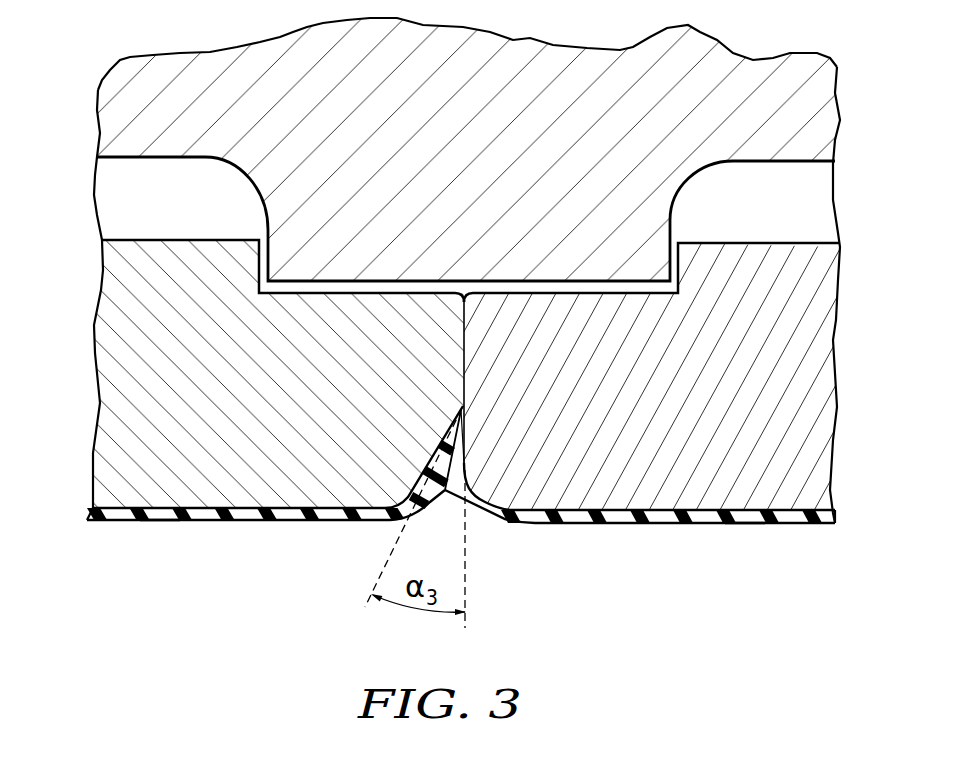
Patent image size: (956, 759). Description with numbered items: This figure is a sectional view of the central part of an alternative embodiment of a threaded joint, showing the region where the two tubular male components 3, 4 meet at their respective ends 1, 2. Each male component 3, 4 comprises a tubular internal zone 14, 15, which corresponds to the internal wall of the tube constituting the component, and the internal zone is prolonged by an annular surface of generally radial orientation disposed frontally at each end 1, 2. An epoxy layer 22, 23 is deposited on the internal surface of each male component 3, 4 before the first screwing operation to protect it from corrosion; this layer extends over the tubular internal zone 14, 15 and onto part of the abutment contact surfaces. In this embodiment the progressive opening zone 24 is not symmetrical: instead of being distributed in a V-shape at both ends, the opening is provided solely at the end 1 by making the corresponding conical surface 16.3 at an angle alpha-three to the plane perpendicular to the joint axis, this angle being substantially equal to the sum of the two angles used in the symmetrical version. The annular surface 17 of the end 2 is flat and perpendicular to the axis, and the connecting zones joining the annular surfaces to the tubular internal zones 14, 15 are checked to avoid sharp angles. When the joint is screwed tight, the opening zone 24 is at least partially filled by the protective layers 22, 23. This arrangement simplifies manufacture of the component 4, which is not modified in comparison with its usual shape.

The end 1 is at (266, 376).
The end 2 is at (668, 379).
The male component 3 is at (90, 319).
The male component 4 is at (850, 373).
The tubular internal zone 14 is at (275, 507).
The tubular internal zone 15 is at (623, 508).
The conical surface 16.3 is at (440, 447).
The annular surface 17 is at (465, 373).
The epoxy layer 22 is at (161, 521).
The epoxy layer 23 is at (744, 524).
The progressive opening zone 24 is at (474, 531).